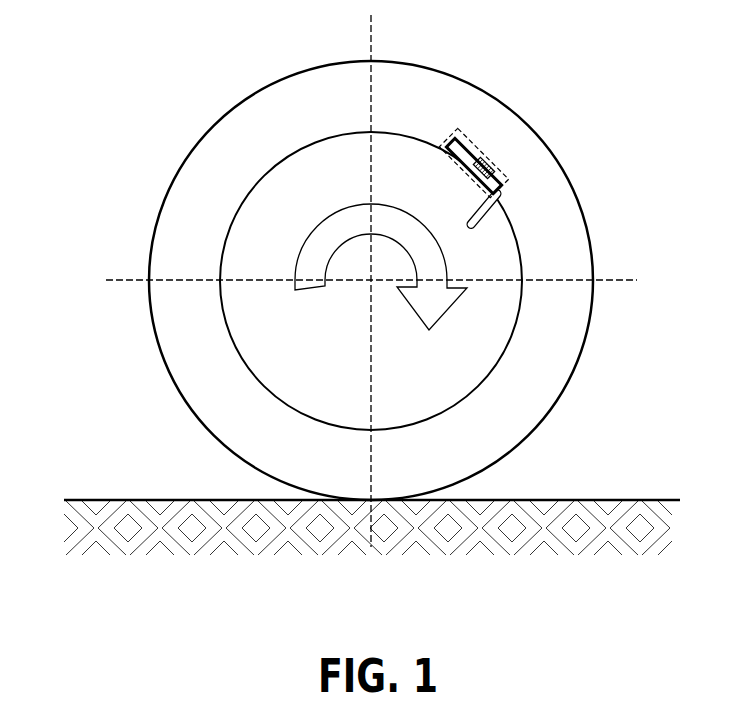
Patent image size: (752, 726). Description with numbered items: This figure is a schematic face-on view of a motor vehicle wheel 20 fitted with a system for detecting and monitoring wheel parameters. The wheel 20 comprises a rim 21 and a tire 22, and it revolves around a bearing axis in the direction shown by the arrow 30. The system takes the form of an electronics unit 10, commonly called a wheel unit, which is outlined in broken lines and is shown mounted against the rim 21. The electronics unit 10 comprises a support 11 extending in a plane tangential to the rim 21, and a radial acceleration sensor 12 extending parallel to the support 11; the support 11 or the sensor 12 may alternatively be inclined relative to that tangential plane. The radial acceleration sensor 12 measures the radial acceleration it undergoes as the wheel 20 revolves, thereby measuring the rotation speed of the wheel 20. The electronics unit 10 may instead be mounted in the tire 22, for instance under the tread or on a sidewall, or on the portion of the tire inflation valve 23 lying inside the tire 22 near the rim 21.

The electronics unit 10 is at (564, 175).
The support 11 is at (500, 187).
The radial acceleration sensor 12 is at (488, 158).
The wheel 20 is at (428, 280).
The rim 21 is at (510, 343).
The tire 22 is at (488, 432).
The tire inflation valve 23 is at (488, 218).
The arrow 30 is at (323, 245).